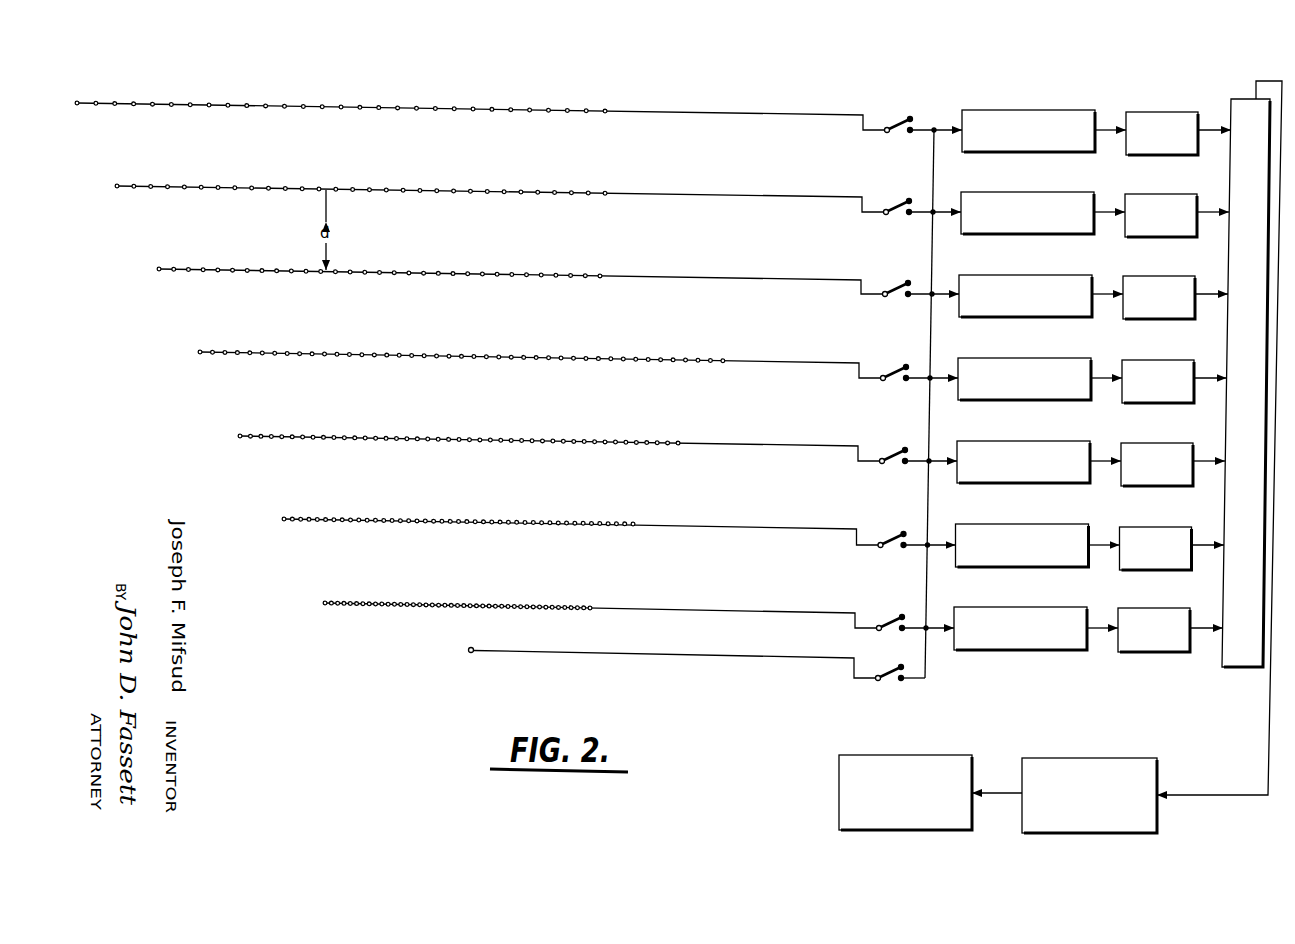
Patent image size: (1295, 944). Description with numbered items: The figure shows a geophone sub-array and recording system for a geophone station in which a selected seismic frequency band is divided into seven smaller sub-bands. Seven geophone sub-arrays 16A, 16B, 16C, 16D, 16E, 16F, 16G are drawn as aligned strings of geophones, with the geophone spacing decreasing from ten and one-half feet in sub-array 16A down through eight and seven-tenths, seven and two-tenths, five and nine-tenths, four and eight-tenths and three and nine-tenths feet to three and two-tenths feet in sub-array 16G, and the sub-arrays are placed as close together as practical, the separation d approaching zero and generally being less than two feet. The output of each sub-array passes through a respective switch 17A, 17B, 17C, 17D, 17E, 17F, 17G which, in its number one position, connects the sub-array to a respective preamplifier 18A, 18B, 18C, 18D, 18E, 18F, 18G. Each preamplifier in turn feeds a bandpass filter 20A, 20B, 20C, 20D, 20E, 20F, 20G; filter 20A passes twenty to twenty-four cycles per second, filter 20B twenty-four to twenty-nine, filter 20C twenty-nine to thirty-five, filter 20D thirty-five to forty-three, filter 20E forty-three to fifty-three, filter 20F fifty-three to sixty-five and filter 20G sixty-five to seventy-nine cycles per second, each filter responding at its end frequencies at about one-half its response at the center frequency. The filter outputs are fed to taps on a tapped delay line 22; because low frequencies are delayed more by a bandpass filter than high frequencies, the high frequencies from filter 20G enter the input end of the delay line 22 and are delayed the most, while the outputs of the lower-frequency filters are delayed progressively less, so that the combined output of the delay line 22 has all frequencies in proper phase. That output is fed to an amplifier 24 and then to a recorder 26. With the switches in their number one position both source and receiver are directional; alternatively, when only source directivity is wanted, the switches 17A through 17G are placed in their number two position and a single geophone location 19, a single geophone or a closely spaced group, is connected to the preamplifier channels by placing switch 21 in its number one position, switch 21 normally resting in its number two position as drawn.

The sub-array 16A is at (604, 108).
The sub-array 16B is at (612, 190).
The sub-array 16C is at (608, 273).
The sub-array 16D is at (617, 357).
The sub-array 16E is at (611, 441).
The sub-array 16F is at (569, 524).
The sub-array 16G is at (527, 605).
The switch 17A is at (906, 116).
The switch 17B is at (908, 199).
The switch 17C is at (904, 282).
The switch 17D is at (904, 365).
The switch 17E is at (904, 448).
The switch 17F is at (903, 532).
The switch 17G is at (902, 615).
The preamplifier 18A is at (1013, 109).
The preamplifier 18B is at (1013, 191).
The preamplifier 18C is at (1013, 274).
The preamplifier 18D is at (1014, 357).
The preamplifier 18E is at (1030, 441).
The preamplifier 18F is at (1030, 525).
The preamplifier 18G is at (1026, 608).
The single geophone location 19 is at (474, 651).
The filter 20A is at (1146, 111).
The filter 20B is at (1144, 194).
The filter 20C is at (1144, 277).
The filter 20D is at (1143, 360).
The filter 20E is at (1140, 443).
The filter 20F is at (1140, 527).
The filter 20G is at (1142, 610).
The switch 21 is at (890, 666).
The tapped delay line 22 is at (1221, 669).
The amplifier 24 is at (1080, 759).
The recorder 26 is at (898, 756).